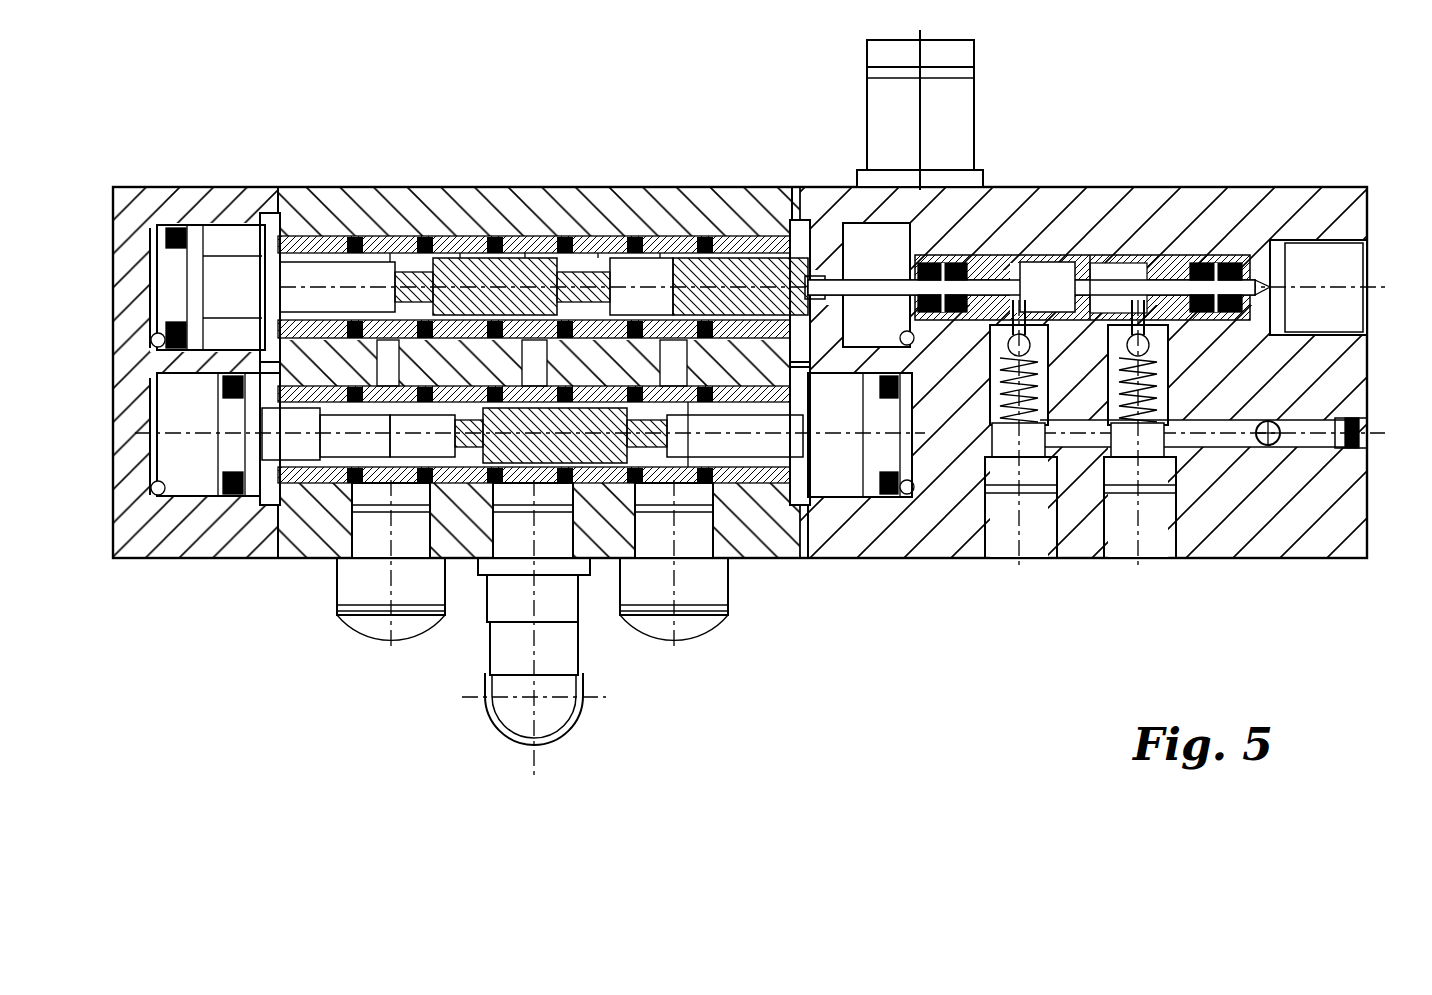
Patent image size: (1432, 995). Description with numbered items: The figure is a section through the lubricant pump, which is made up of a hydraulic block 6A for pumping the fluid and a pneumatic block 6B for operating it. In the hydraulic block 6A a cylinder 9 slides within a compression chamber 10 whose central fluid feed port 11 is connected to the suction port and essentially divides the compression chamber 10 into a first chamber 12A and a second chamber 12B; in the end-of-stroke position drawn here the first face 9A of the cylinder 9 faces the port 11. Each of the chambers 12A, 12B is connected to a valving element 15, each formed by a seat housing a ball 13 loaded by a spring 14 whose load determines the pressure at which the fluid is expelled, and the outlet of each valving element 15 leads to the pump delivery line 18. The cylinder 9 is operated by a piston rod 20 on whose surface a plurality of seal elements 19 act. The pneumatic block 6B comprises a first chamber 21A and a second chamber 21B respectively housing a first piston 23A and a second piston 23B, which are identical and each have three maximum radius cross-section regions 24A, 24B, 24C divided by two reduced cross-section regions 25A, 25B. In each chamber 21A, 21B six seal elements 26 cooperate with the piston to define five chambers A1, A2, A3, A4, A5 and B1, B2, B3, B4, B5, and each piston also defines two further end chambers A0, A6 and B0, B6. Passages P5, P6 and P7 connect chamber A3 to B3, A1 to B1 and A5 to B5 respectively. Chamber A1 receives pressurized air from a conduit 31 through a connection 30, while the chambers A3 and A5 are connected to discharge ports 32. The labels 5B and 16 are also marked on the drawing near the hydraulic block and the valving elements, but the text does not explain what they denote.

The pneumatic block 6B is at (285, 165).
The hydraulic block 6A is at (860, 565).
The maximum radius cross-section region 24A is at (405, 262).
The maximum radius cross-section region 24B is at (525, 265).
The maximum radius cross-section region 24C is at (690, 262).
The reduced cross-section region 25A is at (440, 272).
The reduced cross-section region 25B is at (588, 272).
The second piston 23B is at (245, 240).
The first piston 23A is at (225, 462).
The second chamber 21B is at (300, 245).
The first chamber 21A is at (272, 455).
The end chamber B0 is at (150, 235).
The chamber B1 is at (525, 257).
The chamber B2 is at (460, 257).
The chamber B3 is at (390, 257).
The chamber B4 is at (598, 257).
The chamber B5 is at (660, 257).
The end chamber B6 is at (860, 333).
The end chamber A0 is at (165, 472).
The chamber A1 is at (490, 478).
The chamber A2 is at (420, 478).
The chamber A3 is at (355, 478).
The chamber A4 is at (610, 478).
The chamber A5 is at (690, 478).
The end chamber A6 is at (905, 480).
The passage P5 is at (415, 346).
The passage P6 is at (548, 346).
The passage P7 is at (690, 346).
The piston rod 20 is at (840, 282).
The seal element 19 is at (925, 270).
The valve body portion 5B is at (1005, 268).
The cylinder 9 is at (1105, 262).
The first face 9A is at (1130, 262).
The compression chamber 10 is at (1200, 262).
The first chamber 12A is at (1222, 270).
The second chamber 12B is at (1047, 262).
The ball 13 is at (1010, 346).
The spring 14 is at (1000, 460).
The valving element 15 is at (1035, 540).
The check valve 16 is at (985, 398).
The fluid feed port 11 is at (1075, 322).
The pump delivery line 18 is at (1272, 437).
The seal element 26 is at (375, 346).
The connection 30 is at (560, 650).
The conduit 31 is at (545, 745).
The discharge port 32 is at (385, 507).